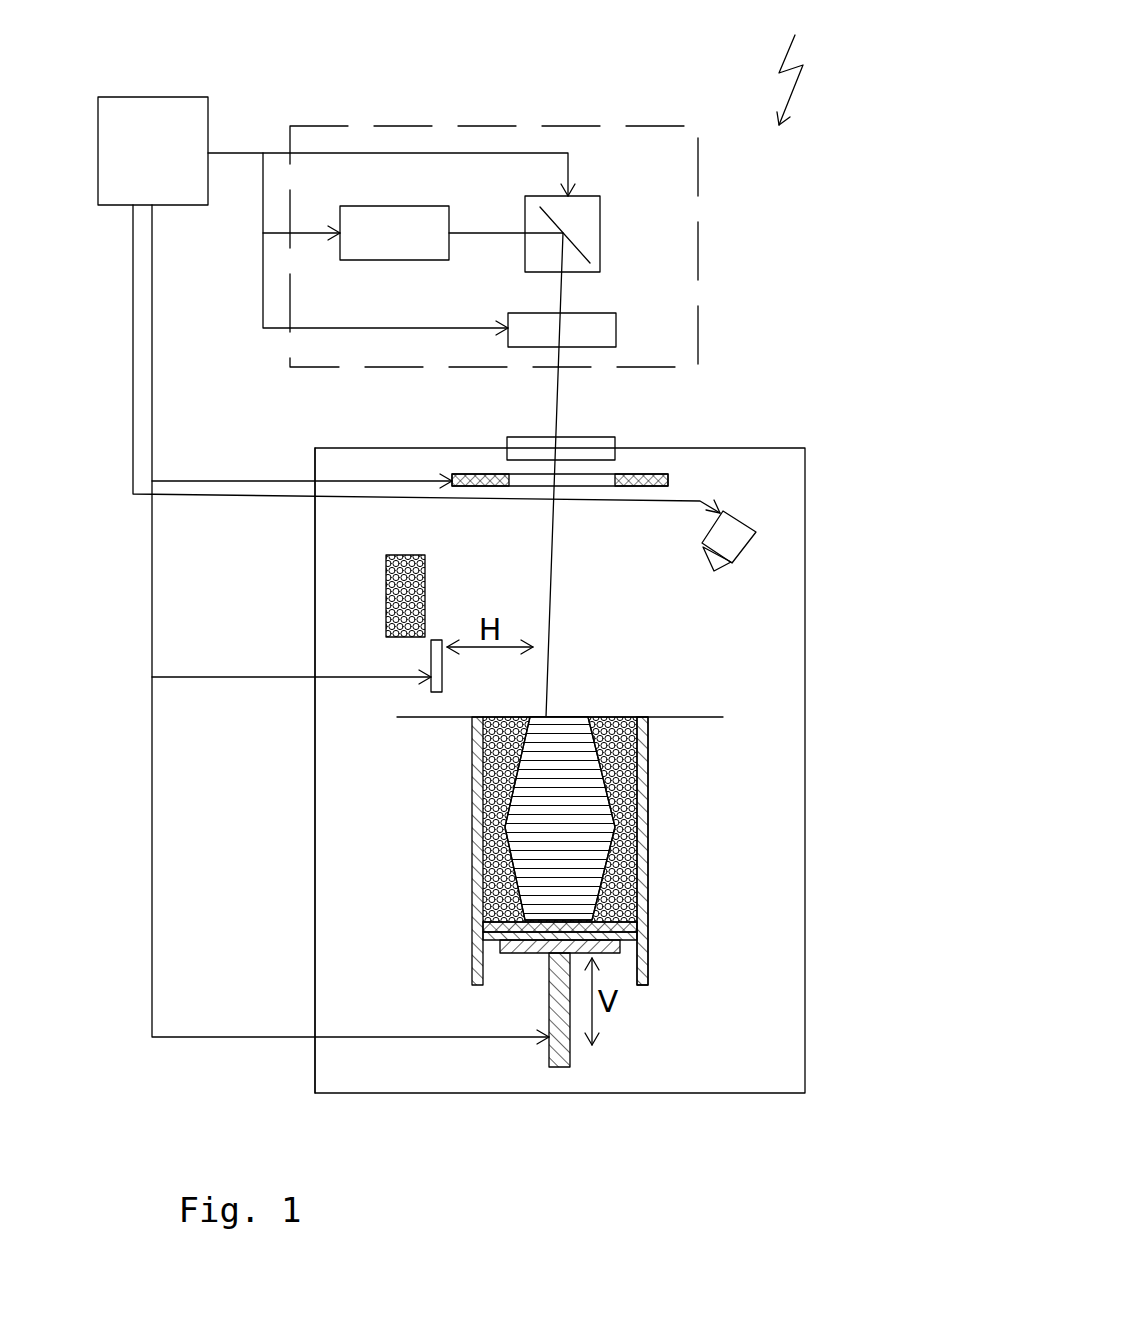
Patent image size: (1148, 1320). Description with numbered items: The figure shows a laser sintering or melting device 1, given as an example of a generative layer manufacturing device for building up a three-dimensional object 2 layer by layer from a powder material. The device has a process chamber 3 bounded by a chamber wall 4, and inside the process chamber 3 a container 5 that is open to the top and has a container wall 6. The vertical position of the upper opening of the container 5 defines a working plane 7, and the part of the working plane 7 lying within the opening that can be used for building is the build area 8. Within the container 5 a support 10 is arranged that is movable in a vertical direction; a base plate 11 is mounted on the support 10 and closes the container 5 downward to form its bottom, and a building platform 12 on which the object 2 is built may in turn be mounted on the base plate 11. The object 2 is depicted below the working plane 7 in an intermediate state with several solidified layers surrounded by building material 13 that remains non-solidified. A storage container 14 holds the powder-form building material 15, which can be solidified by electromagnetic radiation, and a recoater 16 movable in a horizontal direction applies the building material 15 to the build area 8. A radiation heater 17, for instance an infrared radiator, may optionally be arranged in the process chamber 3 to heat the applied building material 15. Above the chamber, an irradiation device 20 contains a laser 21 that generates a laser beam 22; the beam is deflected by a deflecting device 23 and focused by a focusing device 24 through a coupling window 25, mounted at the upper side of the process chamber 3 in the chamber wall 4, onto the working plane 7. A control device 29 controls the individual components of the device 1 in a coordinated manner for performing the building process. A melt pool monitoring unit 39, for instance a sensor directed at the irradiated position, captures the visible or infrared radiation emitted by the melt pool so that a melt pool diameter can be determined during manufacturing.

The laser sintering or melting device 1 is at (797, 64).
The object 2 is at (577, 770).
The process chamber 3 is at (728, 482).
The chamber wall 4 is at (312, 897).
The container 5 is at (650, 903).
The container wall 6 is at (643, 850).
The working plane 7 is at (695, 717).
The build area 8 is at (613, 717).
The support 10 is at (537, 948).
The base plate 11 is at (510, 935).
The building platform 12 is at (480, 925).
The building material remaining non-solidified 13 is at (478, 755).
The storage container 14 is at (405, 555).
The building material 15 is at (422, 596).
The recoater 16 is at (433, 662).
The radiation heater 17 is at (480, 477).
The irradiation device 20 is at (698, 233).
The laser 21 is at (395, 264).
The laser beam 22 is at (468, 232).
The deflecting device 23 is at (590, 207).
The focusing device 24 is at (590, 325).
The coupling window 25 is at (600, 447).
The control device 29 is at (153, 151).
The melt pool monitoring unit 39 is at (727, 527).